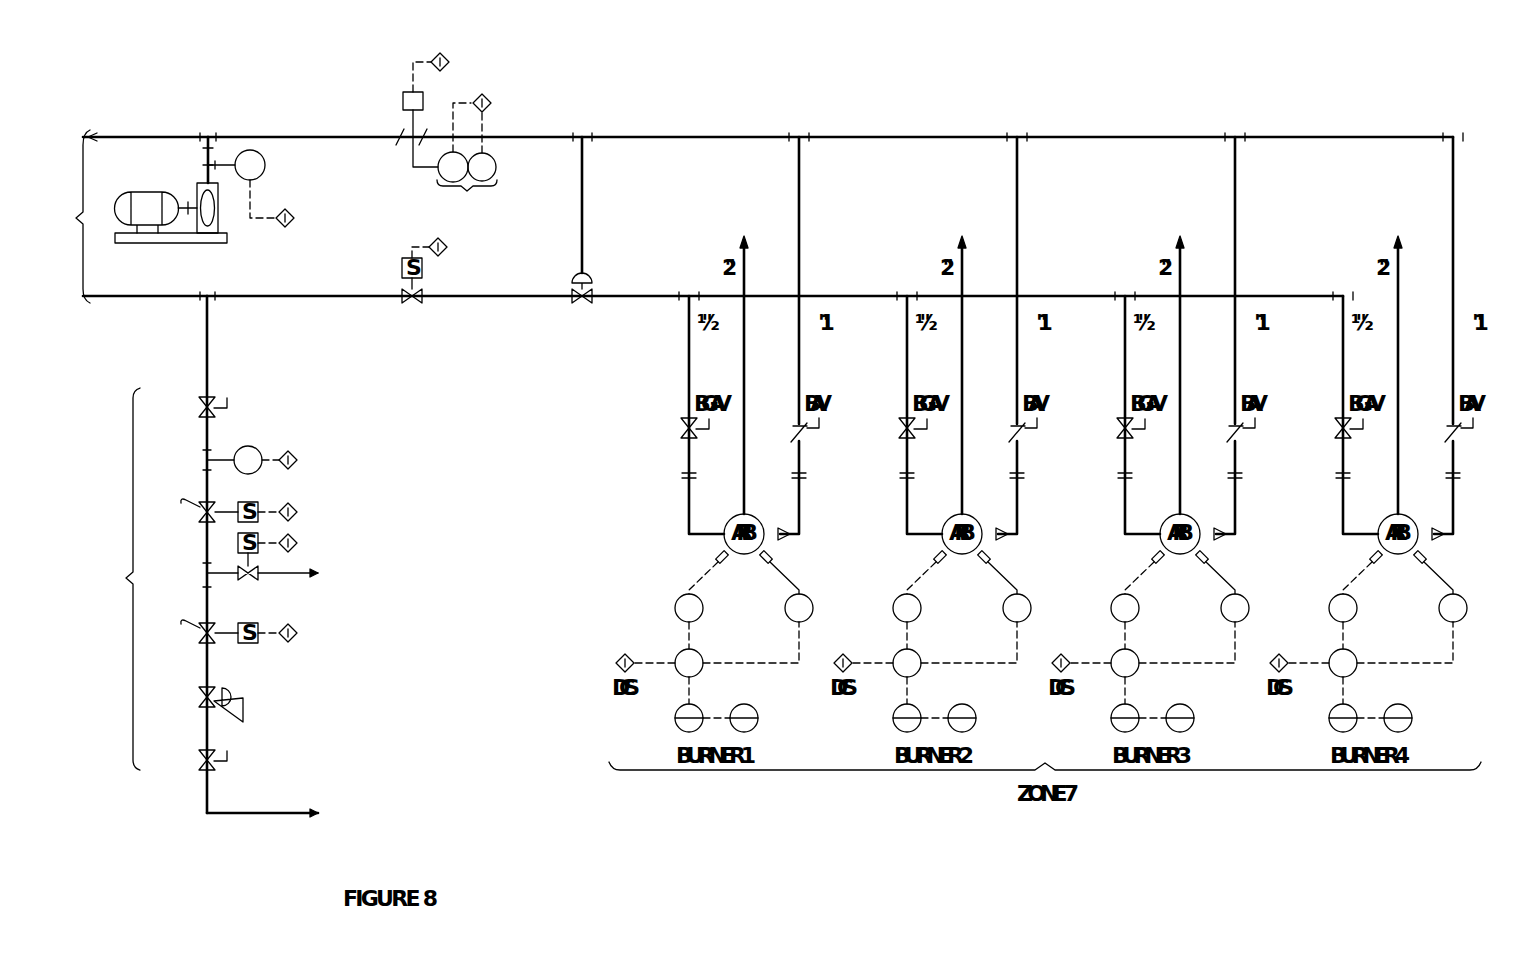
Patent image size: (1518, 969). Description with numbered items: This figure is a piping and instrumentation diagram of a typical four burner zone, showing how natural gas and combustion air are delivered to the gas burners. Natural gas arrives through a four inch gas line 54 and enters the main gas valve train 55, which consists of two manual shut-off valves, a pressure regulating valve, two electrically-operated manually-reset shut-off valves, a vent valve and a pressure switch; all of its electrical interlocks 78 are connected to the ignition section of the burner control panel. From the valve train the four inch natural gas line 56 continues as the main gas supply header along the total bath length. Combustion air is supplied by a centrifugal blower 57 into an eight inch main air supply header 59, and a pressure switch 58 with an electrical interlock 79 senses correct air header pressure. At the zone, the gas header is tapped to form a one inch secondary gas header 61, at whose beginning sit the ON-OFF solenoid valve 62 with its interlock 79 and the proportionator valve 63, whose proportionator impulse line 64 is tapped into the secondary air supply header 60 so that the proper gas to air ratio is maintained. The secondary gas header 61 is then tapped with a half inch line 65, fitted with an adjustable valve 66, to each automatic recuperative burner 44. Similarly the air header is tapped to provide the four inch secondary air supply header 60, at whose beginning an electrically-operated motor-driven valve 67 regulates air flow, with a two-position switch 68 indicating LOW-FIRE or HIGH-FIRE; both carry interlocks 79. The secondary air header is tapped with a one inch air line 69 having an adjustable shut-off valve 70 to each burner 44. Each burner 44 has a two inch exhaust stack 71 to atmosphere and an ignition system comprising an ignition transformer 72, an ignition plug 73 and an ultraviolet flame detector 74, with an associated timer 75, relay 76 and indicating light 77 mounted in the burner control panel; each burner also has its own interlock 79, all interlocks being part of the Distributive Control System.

The automatic recuperative burner 44 is at (1059, 519).
The 4 inch gas line 54 is at (257, 815).
The main gas valve train 55 is at (168, 554).
The four inch natural gas line 56 is at (128, 299).
The centrifugal blower 57 is at (146, 191).
The pressure switch 58 is at (265, 167).
The eight inch main air supply header 59 is at (162, 137).
The four inch secondary air supply header 60 is at (705, 105).
The one inch secondary gas header 61 is at (662, 300).
The burner zone secondary gas header ON-OFF solenoid valve 62 is at (402, 265).
The burner zone secondary gas header proportionator valve 63 is at (584, 312).
The proportionator impulse line 64 is at (584, 217).
The half inch line 65 is at (1036, 415).
The adjustable valve 66 is at (1012, 434).
The electrically-operated motor-driven valve 67 is at (402, 90).
The two-position switch 68 is at (467, 157).
The one inch air line 69 is at (1135, 338).
The adjustable shut-off valve 70 is at (1117, 434).
The two inch exhaust stack 71 is at (297, 572).
The ignition transformer 72 is at (1007, 592).
The ignition plug 73 is at (1038, 550).
The ultraviolet flame detector 74 is at (1111, 592).
The timer 75 is at (1029, 704).
The relay 76 is at (1043, 649).
The indicating light 77 is at (1084, 708).
The electrical interlock 78 is at (316, 616).
The electrical interlock 79 is at (434, 239).